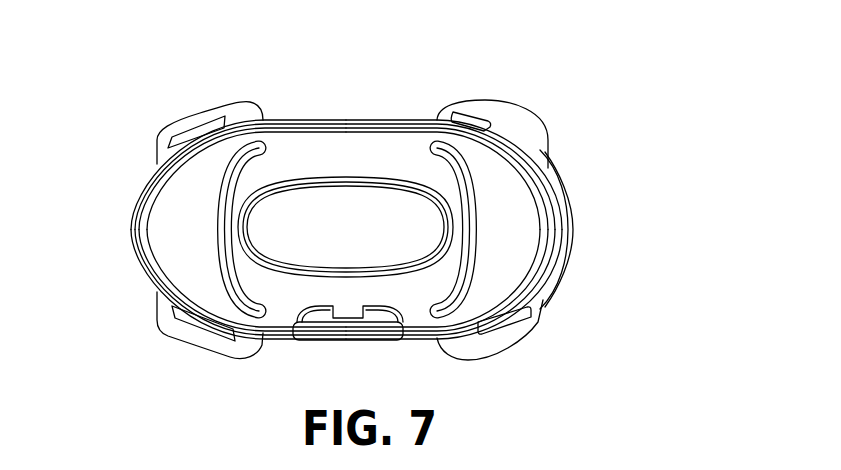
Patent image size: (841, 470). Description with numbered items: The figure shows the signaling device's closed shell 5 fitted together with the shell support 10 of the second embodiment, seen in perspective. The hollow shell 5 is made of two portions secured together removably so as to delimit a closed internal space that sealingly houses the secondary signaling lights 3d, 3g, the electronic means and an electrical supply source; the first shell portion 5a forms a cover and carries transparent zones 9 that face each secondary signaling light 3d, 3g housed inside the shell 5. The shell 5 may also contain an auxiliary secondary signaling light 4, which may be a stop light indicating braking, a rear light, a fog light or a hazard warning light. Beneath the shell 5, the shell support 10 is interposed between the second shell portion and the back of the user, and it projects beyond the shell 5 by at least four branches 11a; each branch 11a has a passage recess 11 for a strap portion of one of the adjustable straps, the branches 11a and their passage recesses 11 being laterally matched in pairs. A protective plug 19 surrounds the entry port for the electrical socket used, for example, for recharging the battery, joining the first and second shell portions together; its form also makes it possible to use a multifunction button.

The secondary signaling light 3d is at (508, 240).
The secondary signaling light 3g is at (180, 222).
The auxiliary secondary signaling light 4 is at (420, 253).
The hollow shell 5 is at (127, 187).
The first shell portion 5a is at (147, 208).
The transparent zones 9 is at (220, 235).
The shell support 10 is at (517, 112).
The passage recess 11 is at (172, 141).
The branches 11a is at (220, 113).
The protective plug 19 is at (375, 318).